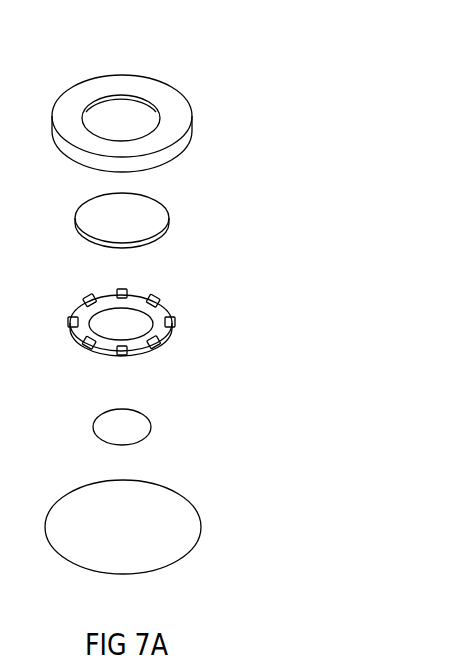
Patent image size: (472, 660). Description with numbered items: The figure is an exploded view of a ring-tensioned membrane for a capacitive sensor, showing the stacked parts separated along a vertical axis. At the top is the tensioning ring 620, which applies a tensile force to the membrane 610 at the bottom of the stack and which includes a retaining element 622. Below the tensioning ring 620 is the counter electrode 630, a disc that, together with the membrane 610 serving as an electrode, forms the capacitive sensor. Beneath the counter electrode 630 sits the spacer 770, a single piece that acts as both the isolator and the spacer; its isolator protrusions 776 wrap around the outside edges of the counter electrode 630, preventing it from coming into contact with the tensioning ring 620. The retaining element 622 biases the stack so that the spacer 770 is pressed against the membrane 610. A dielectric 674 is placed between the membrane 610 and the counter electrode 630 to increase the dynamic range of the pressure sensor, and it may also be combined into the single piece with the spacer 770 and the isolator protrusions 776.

The tensioning ring 620 is at (167, 103).
The counter electrode 630 is at (133, 222).
The spacer 770 is at (196, 300).
The isolator protrusions 776 is at (158, 297).
The dielectric 674 is at (120, 427).
The membrane 610 is at (153, 513).
The retaining element 622 is at (429, 647).